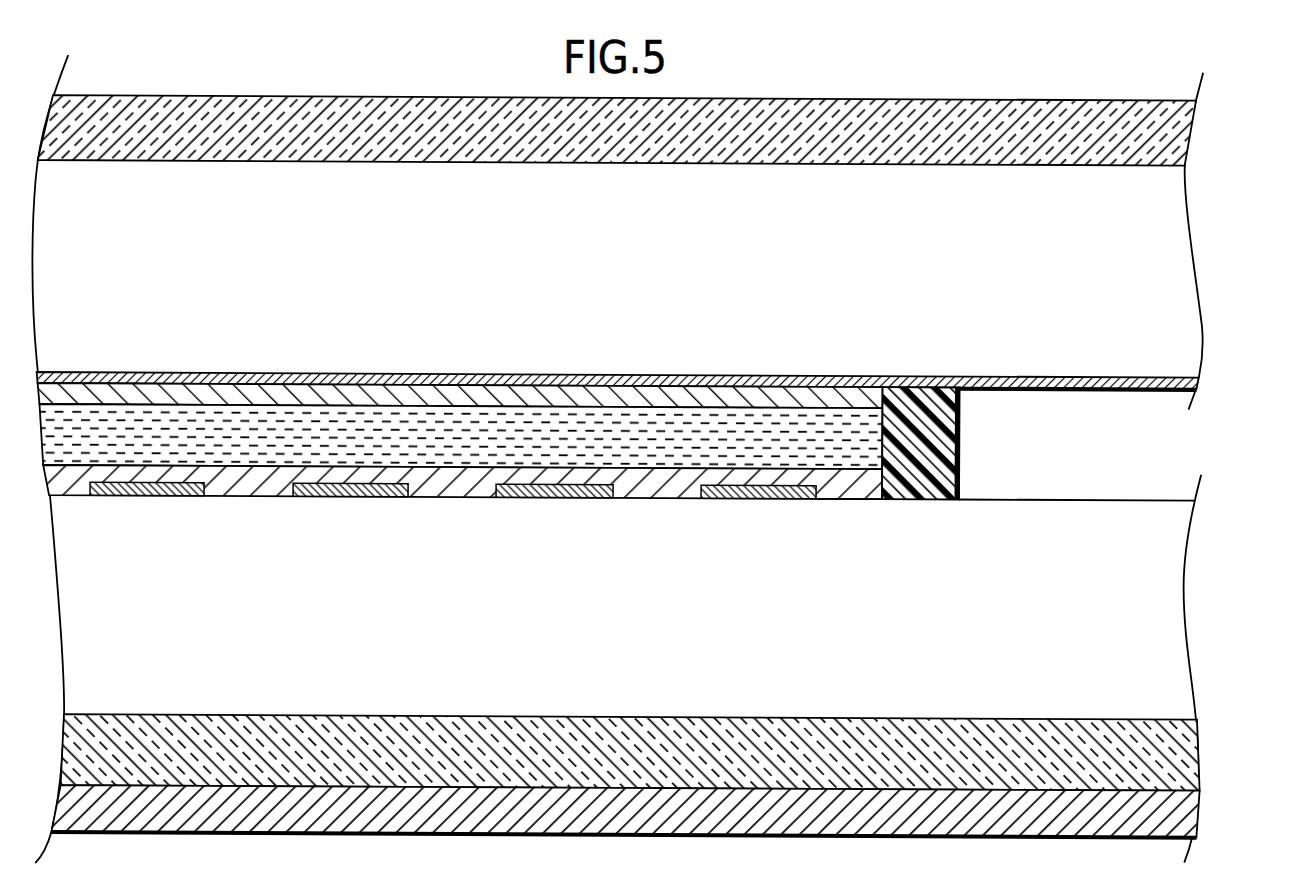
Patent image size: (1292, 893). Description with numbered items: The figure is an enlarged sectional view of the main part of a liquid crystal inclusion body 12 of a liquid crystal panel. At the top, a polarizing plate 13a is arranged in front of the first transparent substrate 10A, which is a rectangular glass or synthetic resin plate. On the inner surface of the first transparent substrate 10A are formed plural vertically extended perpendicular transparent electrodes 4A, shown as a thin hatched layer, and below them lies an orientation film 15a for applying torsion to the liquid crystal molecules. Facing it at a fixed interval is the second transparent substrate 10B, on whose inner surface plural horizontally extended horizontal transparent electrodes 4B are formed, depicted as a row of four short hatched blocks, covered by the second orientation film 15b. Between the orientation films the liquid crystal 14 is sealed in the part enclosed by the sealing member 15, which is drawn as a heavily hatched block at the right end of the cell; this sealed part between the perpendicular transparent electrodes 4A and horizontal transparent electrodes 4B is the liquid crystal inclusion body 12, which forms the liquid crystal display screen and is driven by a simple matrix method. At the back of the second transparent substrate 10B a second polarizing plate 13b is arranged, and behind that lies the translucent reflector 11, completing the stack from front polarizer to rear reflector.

The polarizing plate 13a is at (1168, 143).
The first transparent substrate 10A is at (1183, 272).
The perpendicular transparent electrodes 4A is at (687, 375).
The orientation film 15a is at (482, 400).
The sealing member 15 is at (955, 430).
The orientation film 15b is at (658, 462).
The horizontal transparent electrodes 4B is at (162, 497).
The liquid crystal 14 is at (905, 458).
The liquid crystal inclusion body 12 is at (838, 516).
The second transparent substrate 10B is at (1168, 580).
The polarizing plate 13b is at (1187, 748).
The translucent reflector 11 is at (1193, 810).